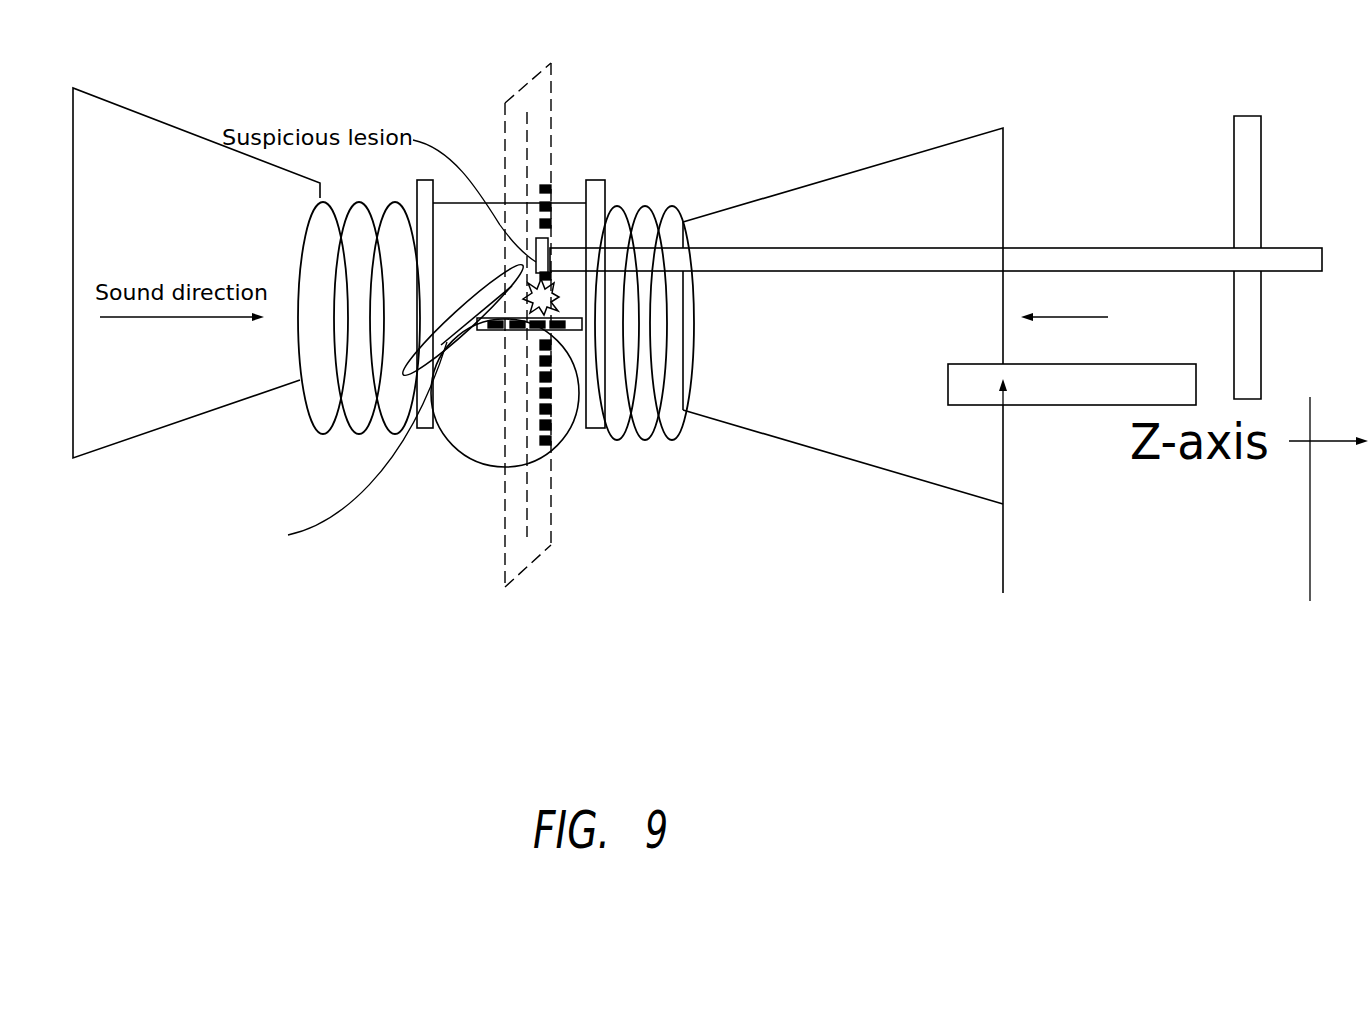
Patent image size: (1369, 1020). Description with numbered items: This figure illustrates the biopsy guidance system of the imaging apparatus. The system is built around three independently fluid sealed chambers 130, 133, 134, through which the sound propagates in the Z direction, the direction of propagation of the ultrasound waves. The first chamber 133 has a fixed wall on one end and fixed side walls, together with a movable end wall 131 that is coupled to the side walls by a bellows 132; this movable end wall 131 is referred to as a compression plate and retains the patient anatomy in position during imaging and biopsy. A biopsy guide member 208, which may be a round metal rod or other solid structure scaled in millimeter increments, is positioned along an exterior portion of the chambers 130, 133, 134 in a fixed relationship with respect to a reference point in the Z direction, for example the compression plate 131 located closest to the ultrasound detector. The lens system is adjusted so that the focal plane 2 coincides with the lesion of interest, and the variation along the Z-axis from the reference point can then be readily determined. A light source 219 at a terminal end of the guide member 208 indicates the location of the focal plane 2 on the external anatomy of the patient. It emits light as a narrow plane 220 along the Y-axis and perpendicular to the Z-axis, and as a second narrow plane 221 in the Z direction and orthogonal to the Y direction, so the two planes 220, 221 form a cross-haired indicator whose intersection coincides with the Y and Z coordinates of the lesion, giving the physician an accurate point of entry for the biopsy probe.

The focal plane 2 is at (527, 490).
The chamber 130 is at (588, 620).
The movable end wall 131 is at (598, 172).
The bellows 132 is at (300, 395).
The first chamber 133 is at (432, 620).
The chamber 134 is at (978, 620).
The biopsy guide member 208 is at (1057, 247).
The light source 219 is at (507, 291).
The narrow plane of light 220 is at (546, 446).
The narrow plane of light 221 is at (578, 440).